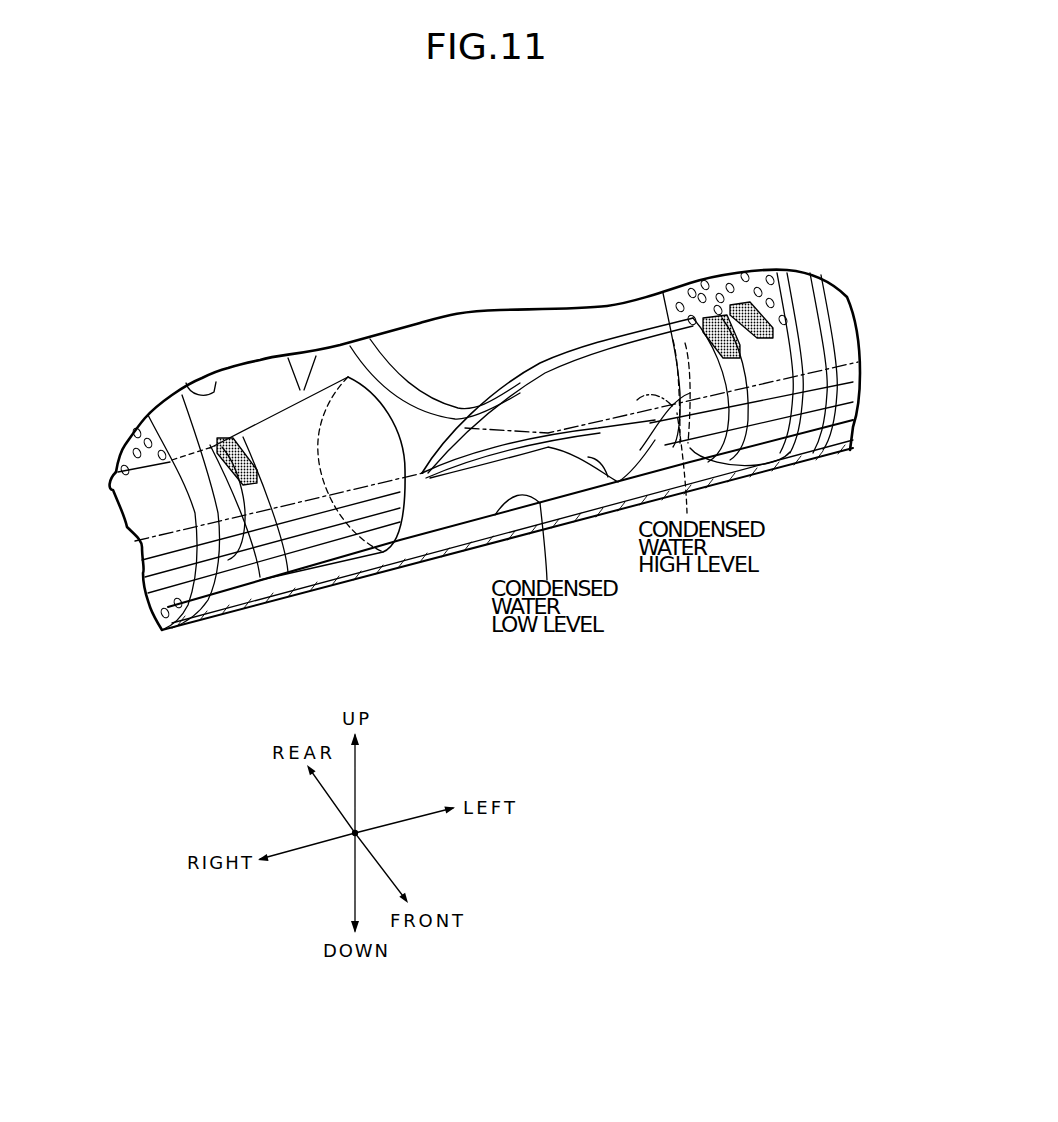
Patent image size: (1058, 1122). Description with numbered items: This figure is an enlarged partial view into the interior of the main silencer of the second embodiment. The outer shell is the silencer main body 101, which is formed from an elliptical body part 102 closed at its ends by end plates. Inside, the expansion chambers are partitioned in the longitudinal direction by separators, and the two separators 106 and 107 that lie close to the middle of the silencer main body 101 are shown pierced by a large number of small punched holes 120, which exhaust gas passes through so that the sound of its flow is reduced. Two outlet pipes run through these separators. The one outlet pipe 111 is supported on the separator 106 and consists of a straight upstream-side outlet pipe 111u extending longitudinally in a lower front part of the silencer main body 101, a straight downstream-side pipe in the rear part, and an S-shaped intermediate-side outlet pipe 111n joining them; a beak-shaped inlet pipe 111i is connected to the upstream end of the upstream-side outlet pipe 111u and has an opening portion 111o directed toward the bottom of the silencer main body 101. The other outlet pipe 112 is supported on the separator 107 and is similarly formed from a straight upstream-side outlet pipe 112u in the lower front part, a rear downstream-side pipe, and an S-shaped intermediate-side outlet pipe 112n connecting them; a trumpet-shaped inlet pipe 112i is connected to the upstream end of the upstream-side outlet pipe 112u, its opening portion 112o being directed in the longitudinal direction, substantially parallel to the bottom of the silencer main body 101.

The silencer main body 101 is at (450, 560).
The elliptical body part 102 is at (243, 613).
The separator 106 is at (797, 282).
The separator 107 is at (170, 417).
The outlet pipe 111 is at (608, 333).
The beak-shaped inlet pipe 111i is at (572, 375).
The intermediate-side outlet pipe 111n is at (460, 335).
The opening portion 111o is at (590, 470).
The upstream-side outlet pipe 111u is at (853, 403).
The outlet pipe 112 is at (242, 428).
The trumpet-shaped inlet pipe 112i is at (333, 540).
The intermediate-side outlet pipe 112n is at (293, 377).
The opening portion 112o is at (375, 550).
The upstream-side outlet pipe 112u is at (147, 607).
The small holes 120 is at (137, 445).